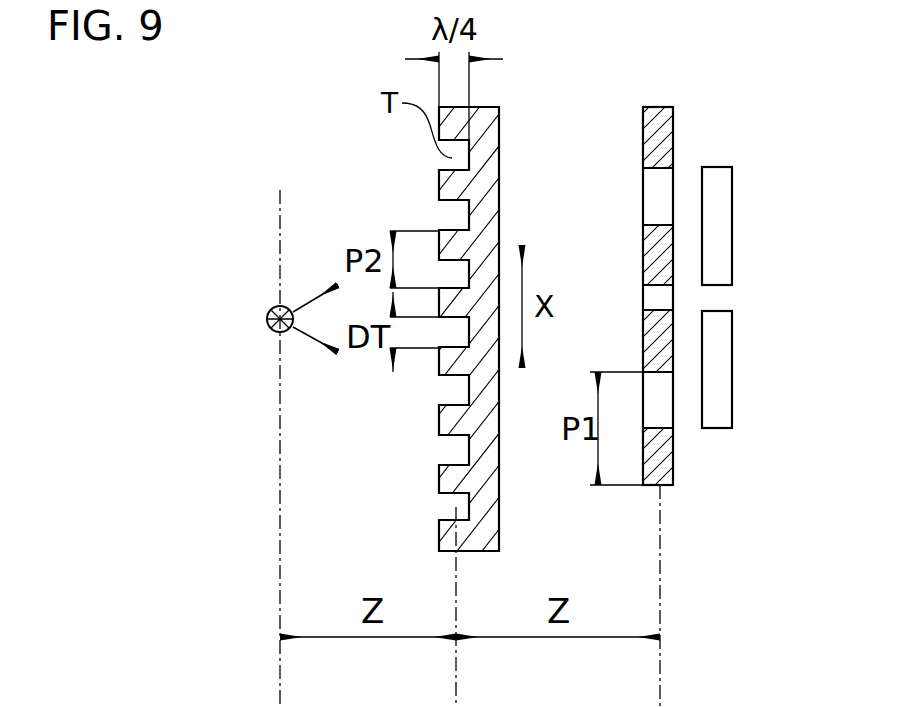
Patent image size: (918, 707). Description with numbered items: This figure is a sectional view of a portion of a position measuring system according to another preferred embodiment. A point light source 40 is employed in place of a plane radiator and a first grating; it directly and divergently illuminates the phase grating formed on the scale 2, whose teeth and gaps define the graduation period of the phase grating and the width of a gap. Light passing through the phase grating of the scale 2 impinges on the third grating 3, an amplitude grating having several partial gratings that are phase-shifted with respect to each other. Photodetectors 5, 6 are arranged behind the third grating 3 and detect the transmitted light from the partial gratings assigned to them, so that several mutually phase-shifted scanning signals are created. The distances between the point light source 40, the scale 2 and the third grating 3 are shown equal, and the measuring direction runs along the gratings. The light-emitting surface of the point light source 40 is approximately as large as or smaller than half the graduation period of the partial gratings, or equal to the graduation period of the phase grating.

The scale 2 is at (488, 173).
The third grating 3 is at (663, 152).
The photodetector 5 is at (720, 240).
The photodetector 6 is at (722, 373).
The point light source 40 is at (267, 318).